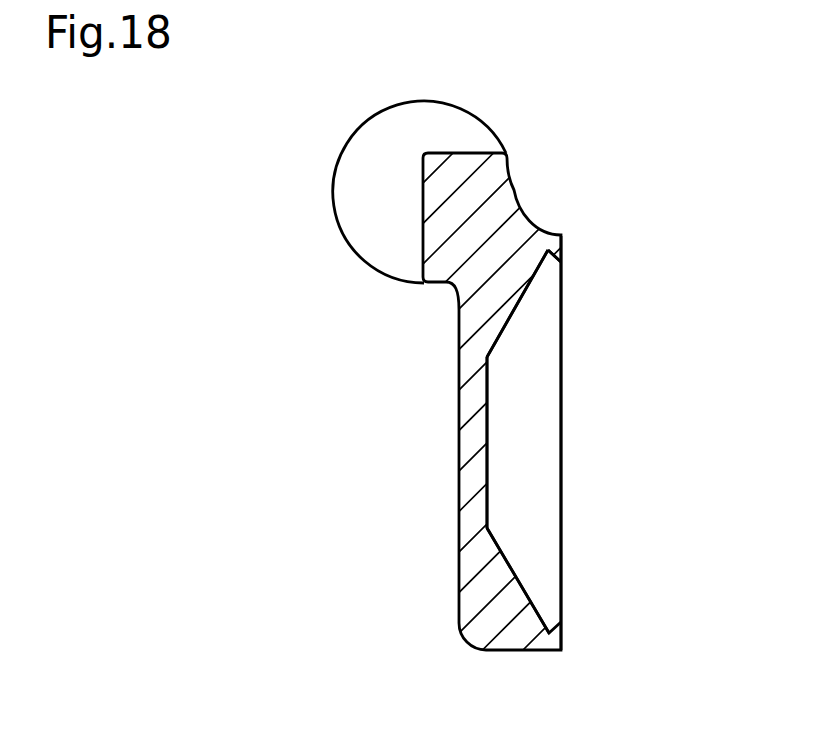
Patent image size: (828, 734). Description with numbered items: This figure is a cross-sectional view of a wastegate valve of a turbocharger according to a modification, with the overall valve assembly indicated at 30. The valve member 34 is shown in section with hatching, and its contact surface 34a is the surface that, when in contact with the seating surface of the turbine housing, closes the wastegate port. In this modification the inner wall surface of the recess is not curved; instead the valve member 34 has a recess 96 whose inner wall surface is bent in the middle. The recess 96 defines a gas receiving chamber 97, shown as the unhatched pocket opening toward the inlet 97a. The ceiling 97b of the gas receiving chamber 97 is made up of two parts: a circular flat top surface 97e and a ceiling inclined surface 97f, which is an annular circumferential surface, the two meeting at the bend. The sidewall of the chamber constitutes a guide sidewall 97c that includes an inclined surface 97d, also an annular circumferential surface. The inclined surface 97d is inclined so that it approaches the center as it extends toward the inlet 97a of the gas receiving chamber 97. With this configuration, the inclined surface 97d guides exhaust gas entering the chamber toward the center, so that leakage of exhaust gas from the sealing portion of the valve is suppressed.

The ball joint assembly 30 is at (350, 427).
The valve member 34 is at (459, 577).
The contact surface 34a is at (561, 247).
The recess 96 is at (495, 510).
The gas receiving chamber 97 is at (540, 460).
The inlet 97a is at (556, 470).
The ceiling 97b is at (632, 330).
The guide sidewall 97c is at (548, 251).
The inclined surface 97d is at (628, 270).
The flat top surface 97e is at (488, 383).
The ceiling inclined surface 97f is at (503, 330).